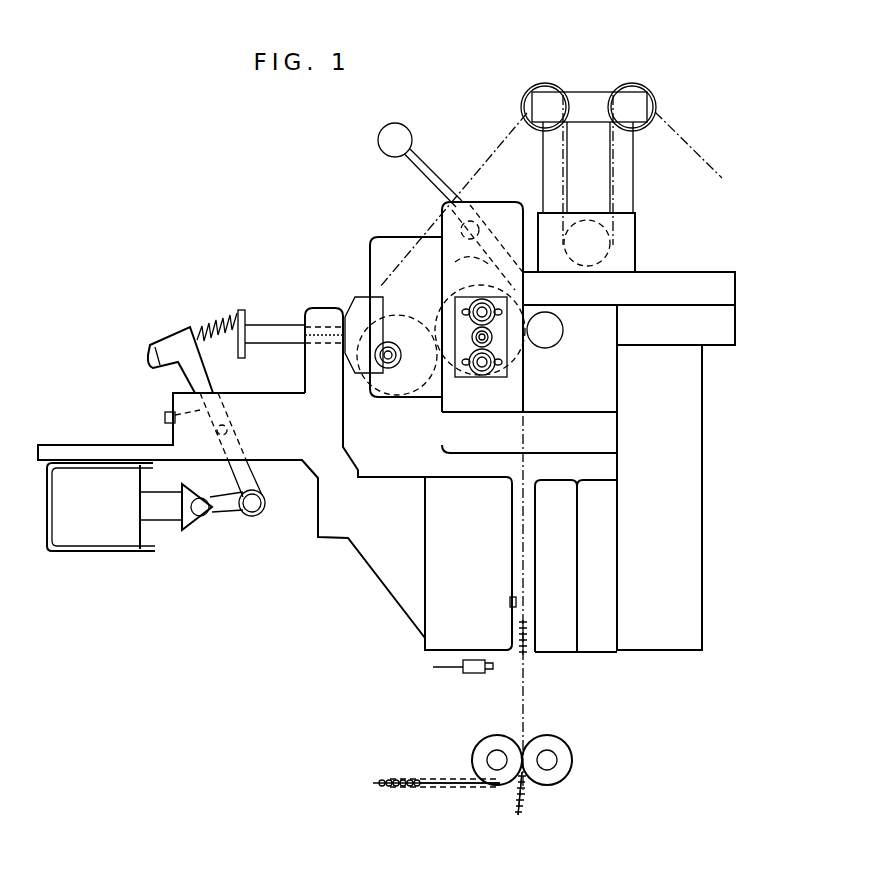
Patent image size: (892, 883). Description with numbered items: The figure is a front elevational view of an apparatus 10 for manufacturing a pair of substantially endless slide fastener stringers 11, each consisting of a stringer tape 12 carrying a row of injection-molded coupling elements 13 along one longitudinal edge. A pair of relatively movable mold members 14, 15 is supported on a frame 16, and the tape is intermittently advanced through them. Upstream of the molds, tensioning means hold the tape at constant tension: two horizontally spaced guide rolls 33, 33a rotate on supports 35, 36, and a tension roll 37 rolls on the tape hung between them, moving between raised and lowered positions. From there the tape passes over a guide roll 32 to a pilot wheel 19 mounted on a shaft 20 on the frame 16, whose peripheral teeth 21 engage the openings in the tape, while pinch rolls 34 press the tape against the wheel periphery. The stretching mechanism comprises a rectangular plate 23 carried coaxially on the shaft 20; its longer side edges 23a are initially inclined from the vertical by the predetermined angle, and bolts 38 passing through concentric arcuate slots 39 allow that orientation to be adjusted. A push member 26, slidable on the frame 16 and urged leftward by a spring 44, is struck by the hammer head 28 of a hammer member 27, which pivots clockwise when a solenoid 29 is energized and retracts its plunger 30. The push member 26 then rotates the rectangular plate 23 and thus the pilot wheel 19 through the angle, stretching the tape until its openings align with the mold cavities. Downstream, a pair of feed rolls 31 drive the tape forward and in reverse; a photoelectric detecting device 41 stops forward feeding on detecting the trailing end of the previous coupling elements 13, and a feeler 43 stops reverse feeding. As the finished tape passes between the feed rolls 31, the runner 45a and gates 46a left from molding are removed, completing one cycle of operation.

The apparatus 10 is at (318, 222).
The slide fastener stringers 11 is at (427, 793).
The stringer tape 12 is at (700, 148).
The injection-molded coupling elements 13 is at (400, 775).
The first mold member 14 is at (437, 625).
The second mold member 15 is at (558, 645).
The frame 16 is at (382, 558).
The pilot wheel 19 is at (528, 410).
The shaft 20 is at (475, 335).
The peripheral teeth 21 is at (545, 348).
The rectangular plate 23 is at (508, 343).
The longer side edges 23a is at (452, 345).
The push member 26 is at (362, 300).
The hammer member 27 is at (185, 373).
The hammer head 28 is at (230, 315).
The solenoid 29 is at (93, 540).
The plunger 30 is at (165, 515).
The feed rolls 31 is at (480, 750).
The guide roll 32 is at (385, 385).
The guide roll 33 is at (543, 85).
The guide roll 33a is at (640, 88).
The pinch rolls 34 is at (442, 235).
The support 35 is at (552, 167).
The support 36 is at (625, 180).
The tension roll 37 is at (610, 247).
The bolts 38 is at (466, 310).
The arcuate slots 39 is at (500, 312).
The photoelectric detecting device 41 is at (474, 672).
The feeler 43 is at (510, 600).
The guide member 44 is at (316, 312).
The runner 45a is at (521, 805).
The coupling element 46a is at (520, 793).